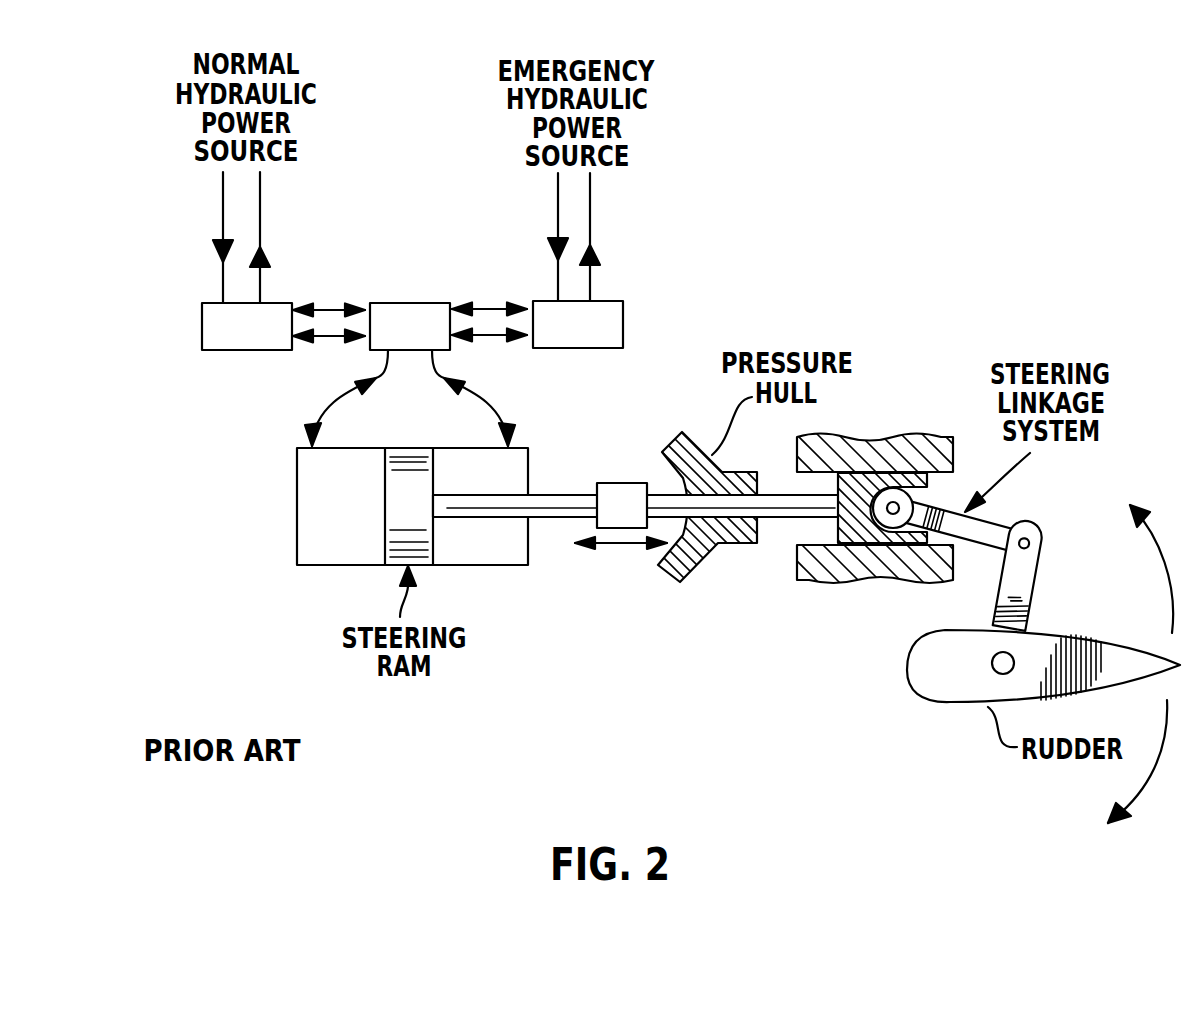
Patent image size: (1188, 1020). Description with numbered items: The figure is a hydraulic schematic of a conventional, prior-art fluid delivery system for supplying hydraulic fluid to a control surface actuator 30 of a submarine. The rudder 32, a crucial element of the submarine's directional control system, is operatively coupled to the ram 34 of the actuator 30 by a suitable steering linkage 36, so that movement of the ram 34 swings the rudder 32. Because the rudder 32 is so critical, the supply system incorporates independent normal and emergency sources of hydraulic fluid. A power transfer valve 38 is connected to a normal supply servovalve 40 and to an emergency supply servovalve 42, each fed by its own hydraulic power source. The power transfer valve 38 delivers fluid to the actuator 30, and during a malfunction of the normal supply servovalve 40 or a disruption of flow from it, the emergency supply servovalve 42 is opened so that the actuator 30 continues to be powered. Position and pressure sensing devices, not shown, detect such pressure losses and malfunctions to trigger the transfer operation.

The control surface actuator 30 is at (297, 548).
The rudder 32 is at (1032, 638).
The ram 34 is at (557, 503).
The steering linkage 36 is at (973, 532).
The power transfer valve 38 is at (418, 303).
The normal supply servovalve 40 is at (257, 351).
The emergency supply servovalve 42 is at (623, 315).